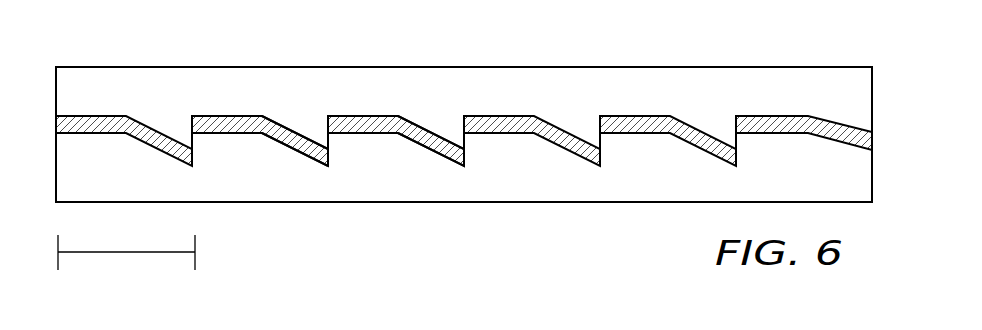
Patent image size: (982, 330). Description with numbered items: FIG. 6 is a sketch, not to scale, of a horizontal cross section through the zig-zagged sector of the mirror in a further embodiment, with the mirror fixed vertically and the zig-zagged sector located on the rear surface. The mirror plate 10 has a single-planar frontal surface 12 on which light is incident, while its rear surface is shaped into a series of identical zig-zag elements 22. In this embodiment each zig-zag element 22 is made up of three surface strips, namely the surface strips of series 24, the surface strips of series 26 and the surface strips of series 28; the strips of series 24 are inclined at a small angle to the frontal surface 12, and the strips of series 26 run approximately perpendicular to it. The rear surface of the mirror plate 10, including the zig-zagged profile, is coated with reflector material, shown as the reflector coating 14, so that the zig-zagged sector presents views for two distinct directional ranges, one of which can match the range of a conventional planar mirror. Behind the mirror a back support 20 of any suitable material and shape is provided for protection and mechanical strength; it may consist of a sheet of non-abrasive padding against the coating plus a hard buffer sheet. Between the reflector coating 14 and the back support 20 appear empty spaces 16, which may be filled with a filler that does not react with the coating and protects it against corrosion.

The mirror plate 10 is at (464, 134).
The frontal surface 12 is at (570, 201).
The reflector coating 14 is at (485, 122).
The empty spaces 16 is at (445, 125).
The back support 20 is at (464, 90).
The zig-zag elements 22 is at (126, 239).
The surface strips of series 24 is at (295, 157).
The surface strips of series 26 is at (330, 143).
The surface strips of series 28 is at (225, 133).